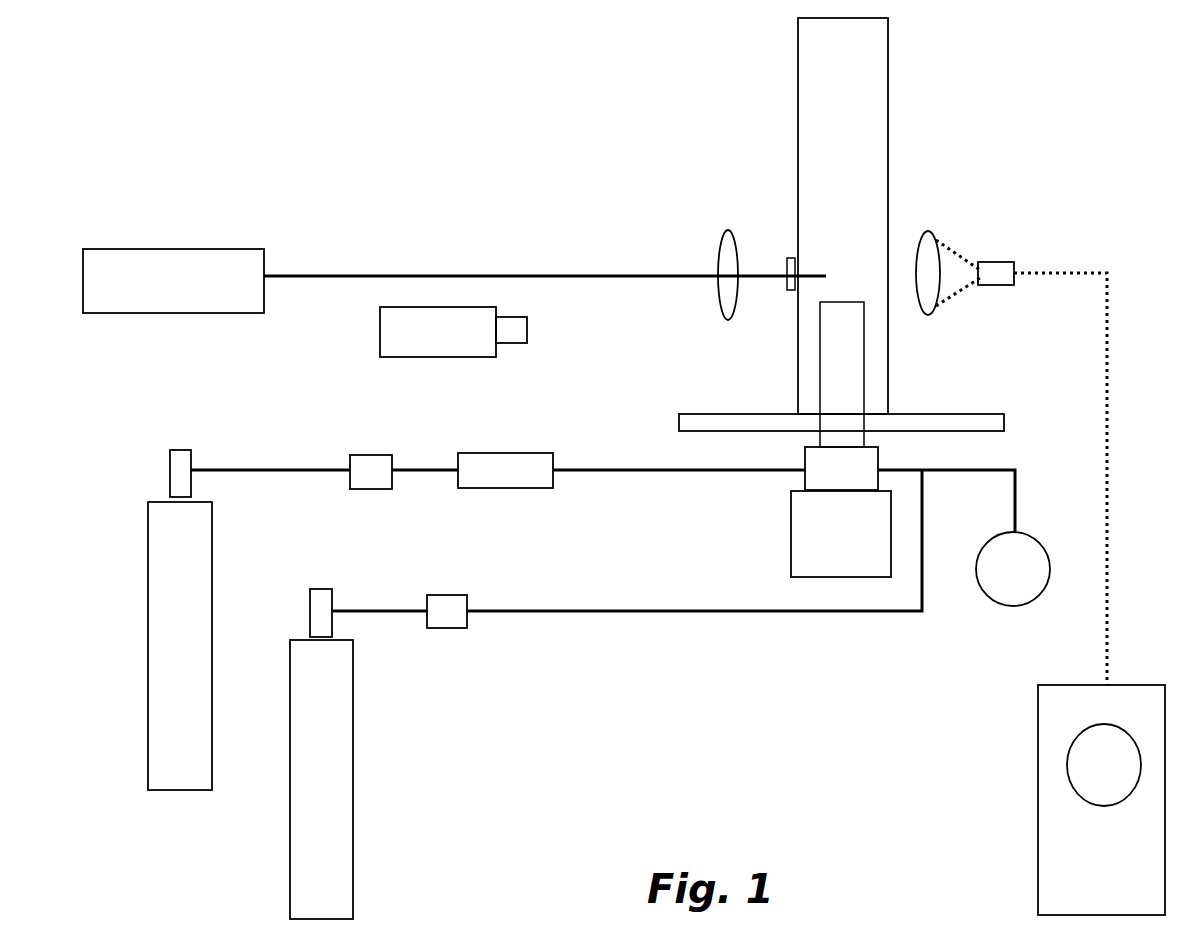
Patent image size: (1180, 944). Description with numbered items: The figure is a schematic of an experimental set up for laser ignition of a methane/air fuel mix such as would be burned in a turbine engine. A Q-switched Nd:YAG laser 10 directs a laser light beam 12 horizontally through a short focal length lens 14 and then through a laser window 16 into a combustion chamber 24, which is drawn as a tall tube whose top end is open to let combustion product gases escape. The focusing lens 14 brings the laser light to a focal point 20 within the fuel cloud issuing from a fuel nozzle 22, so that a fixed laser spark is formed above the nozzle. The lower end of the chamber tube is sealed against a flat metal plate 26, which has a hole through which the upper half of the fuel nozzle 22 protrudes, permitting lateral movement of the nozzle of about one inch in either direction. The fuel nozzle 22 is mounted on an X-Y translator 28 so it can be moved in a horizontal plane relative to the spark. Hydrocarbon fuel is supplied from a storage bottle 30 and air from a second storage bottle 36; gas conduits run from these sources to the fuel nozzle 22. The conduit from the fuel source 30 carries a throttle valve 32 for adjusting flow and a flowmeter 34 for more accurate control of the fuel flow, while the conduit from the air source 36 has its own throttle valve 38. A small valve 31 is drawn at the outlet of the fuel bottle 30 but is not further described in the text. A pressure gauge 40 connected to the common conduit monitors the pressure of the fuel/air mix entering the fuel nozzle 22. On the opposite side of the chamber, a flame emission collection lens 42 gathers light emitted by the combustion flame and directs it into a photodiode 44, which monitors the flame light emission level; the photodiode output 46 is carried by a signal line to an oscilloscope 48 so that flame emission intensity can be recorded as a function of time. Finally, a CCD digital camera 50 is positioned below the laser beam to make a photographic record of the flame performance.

The Q-switched Nd:YAG laser 10 is at (190, 294).
The laser light beam 12 is at (458, 275).
The short focal length lens 14 is at (718, 252).
The laser window 16 is at (785, 268).
The focal point 20 is at (836, 277).
The fuel nozzle 22 is at (859, 387).
The combustion chamber 24 is at (859, 114).
The flat metal plate 26 is at (976, 413).
The X-Y translator 28 is at (857, 544).
The fuel source storage bottle 30 is at (195, 654).
The first gas valve 31 is at (181, 449).
The throttle valve 32 is at (371, 454).
The flowmeter 34 is at (552, 455).
The air source storage bottle 36 is at (337, 794).
The throttle valve 38 is at (446, 594).
The pressure gauge 40 is at (1050, 568).
The flame emission collection lens 42 is at (931, 233).
The photodiode 44 is at (996, 286).
The photodiode output 46 is at (1107, 408).
The oscilloscope 48 is at (1120, 870).
The CCD digital camera 50 is at (453, 342).